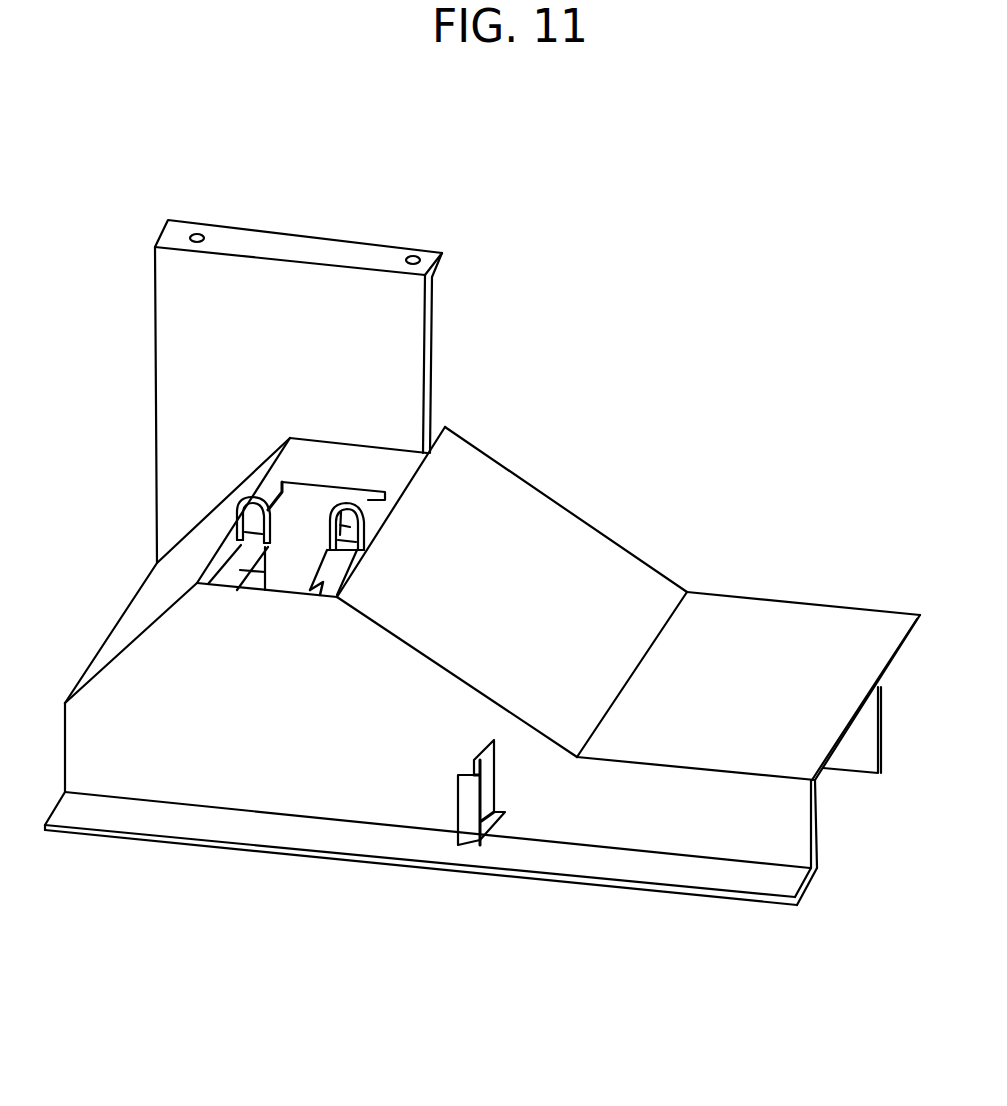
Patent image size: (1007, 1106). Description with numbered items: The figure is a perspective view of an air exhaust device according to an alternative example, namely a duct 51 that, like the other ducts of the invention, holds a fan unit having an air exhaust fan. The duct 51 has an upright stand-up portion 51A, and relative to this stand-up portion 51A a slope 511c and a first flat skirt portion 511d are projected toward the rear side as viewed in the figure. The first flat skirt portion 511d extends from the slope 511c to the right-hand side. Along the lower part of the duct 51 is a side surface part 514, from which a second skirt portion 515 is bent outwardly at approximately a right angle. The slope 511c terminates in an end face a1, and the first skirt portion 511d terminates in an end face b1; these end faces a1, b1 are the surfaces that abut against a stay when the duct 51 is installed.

The duct 51 is at (632, 352).
The stand-up portion 51A is at (400, 362).
The slope 511c is at (512, 497).
The first flat skirt portion 511d is at (818, 620).
The end face of the slope a1 is at (627, 542).
The end face of the first skirt portion b1 is at (742, 588).
The side surface part 514 is at (778, 848).
The second skirt portion 515 is at (658, 860).